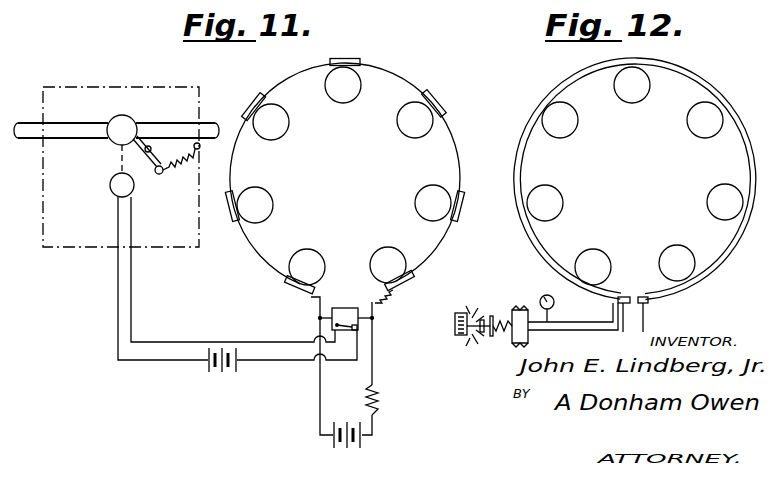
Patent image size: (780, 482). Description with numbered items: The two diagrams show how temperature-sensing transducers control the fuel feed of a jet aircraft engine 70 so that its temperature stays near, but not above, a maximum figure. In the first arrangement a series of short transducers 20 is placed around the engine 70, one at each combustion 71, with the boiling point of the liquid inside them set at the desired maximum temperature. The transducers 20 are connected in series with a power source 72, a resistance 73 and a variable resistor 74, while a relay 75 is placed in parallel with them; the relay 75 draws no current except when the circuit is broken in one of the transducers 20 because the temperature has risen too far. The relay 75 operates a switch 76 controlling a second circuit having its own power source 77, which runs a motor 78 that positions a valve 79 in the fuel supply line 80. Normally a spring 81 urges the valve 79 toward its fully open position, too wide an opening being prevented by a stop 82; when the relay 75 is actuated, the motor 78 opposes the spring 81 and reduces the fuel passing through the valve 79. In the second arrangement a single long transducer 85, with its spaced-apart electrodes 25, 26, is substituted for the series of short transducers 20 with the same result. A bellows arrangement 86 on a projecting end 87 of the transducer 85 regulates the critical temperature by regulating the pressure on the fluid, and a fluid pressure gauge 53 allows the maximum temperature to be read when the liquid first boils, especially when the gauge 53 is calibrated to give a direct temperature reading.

In FIG. 11, the transducer 20 is at (325, 68).
In FIG. 12, the electrode 25 is at (645, 297).
In FIG. 12, the electrode 26 is at (624, 297).
In FIG. 12, the fluid pressure gauge 53 is at (552, 295).
In FIG. 11, the jet aircraft engine 70 is at (348, 150).
In FIG. 12, the jet aircraft engine 70 is at (640, 158).
In FIG. 11, the combustion 71 is at (345, 92).
In FIG. 12, the combustion 71 is at (700, 115).
In FIG. 11, the power source 72 is at (365, 447).
In FIG. 11, the resistance 73 is at (379, 398).
In FIG. 11, the variable resistor 74 is at (368, 303).
In FIG. 11, the relay 75 is at (320, 313).
In FIG. 11, the switch 76 is at (358, 327).
In FIG. 11, the power source 77 is at (223, 373).
In FIG. 11, the motor 78 is at (110, 186).
In FIG. 11, the valve 79 is at (117, 115).
In FIG. 11, the fuel supply line 80 is at (33, 126).
In FIG. 11, the spring 81 is at (170, 171).
In FIG. 11, the stop 82 is at (151, 146).
In FIG. 12, the long transducer 85 is at (710, 86).
In FIG. 12, the bellows arrangement 86 is at (518, 310).
In FIG. 12, the projecting end 87 is at (562, 326).